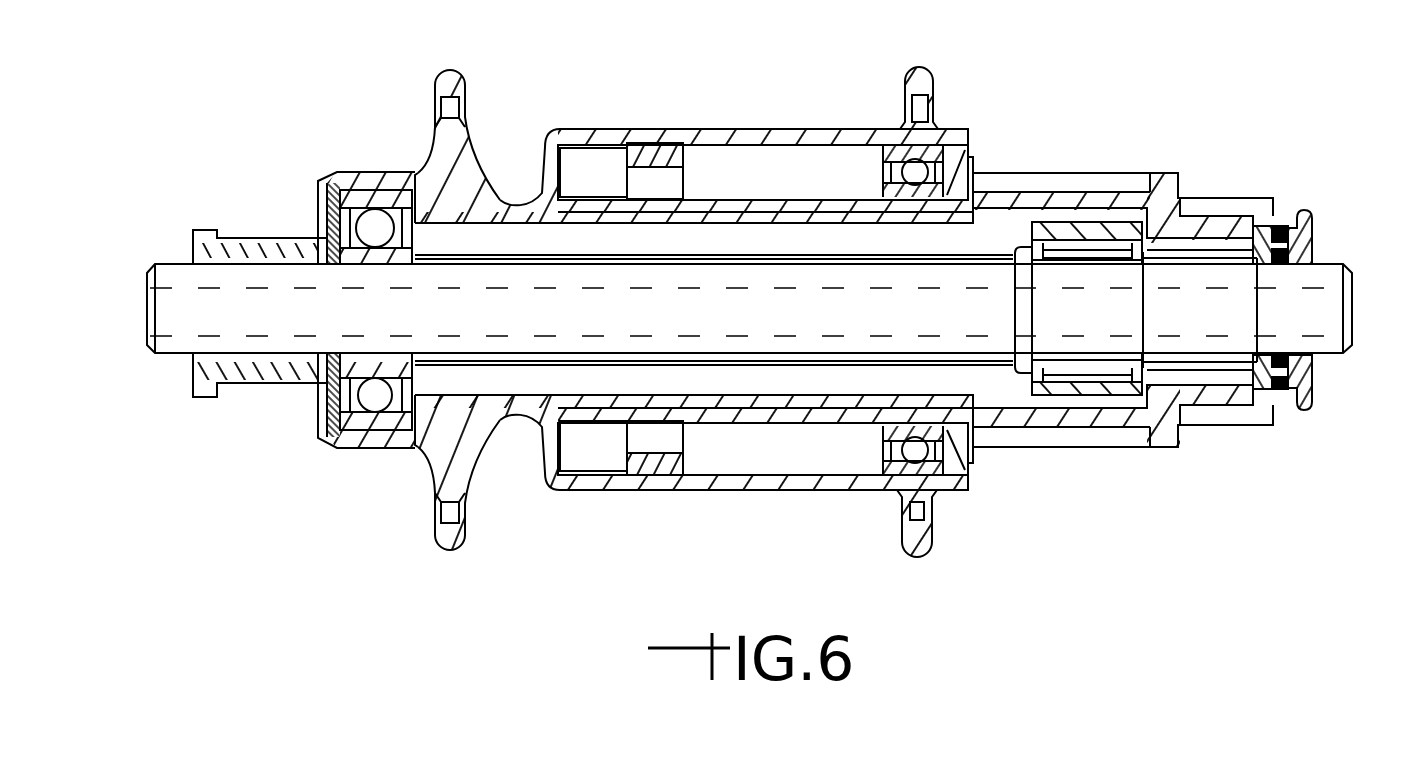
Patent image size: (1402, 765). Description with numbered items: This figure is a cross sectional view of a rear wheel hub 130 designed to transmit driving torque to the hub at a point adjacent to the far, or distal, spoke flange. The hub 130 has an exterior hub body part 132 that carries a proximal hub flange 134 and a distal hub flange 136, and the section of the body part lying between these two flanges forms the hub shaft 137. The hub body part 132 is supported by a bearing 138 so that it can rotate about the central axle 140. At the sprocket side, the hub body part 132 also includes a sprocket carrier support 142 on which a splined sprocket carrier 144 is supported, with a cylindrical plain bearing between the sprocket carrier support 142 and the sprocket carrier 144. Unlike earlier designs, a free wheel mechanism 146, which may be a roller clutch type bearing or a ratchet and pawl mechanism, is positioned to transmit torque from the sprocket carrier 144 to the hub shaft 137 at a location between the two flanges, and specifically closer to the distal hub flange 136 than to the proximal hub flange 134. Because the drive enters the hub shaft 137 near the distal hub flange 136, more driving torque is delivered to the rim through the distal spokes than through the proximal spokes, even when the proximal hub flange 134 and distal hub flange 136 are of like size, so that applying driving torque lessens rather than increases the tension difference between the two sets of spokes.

The hub 130 is at (337, 469).
The exterior hub body part 132 is at (764, 132).
The proximal hub flange 134 is at (937, 80).
The distal hub flange 136 is at (470, 138).
The hub shaft 137 is at (576, 128).
The bearing 138 is at (383, 180).
The axle 140 is at (164, 259).
The sprocket carrier support 142 is at (1149, 208).
The splined sprocket carrier 144 is at (1055, 192).
The free wheel mechanism 146 is at (597, 162).